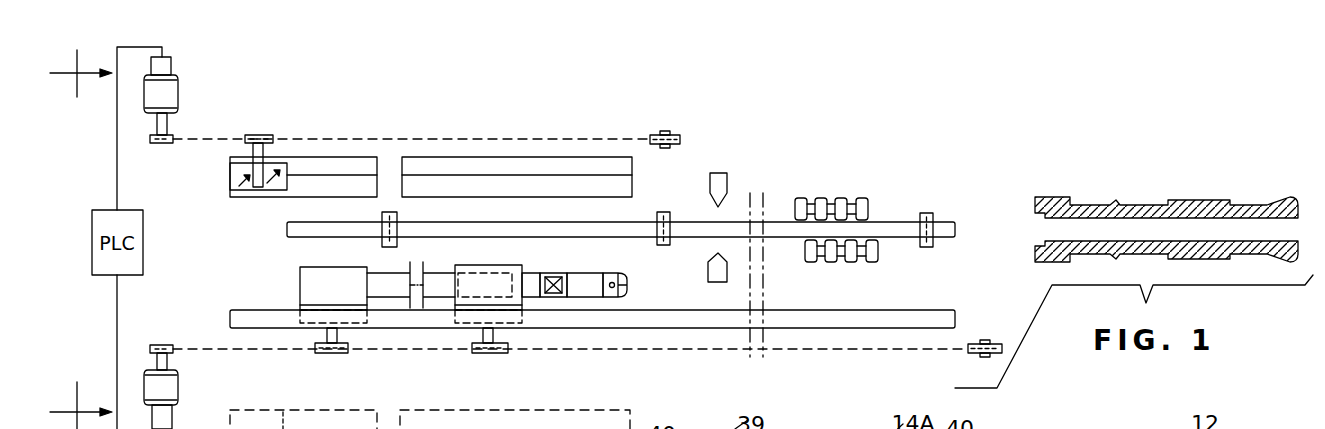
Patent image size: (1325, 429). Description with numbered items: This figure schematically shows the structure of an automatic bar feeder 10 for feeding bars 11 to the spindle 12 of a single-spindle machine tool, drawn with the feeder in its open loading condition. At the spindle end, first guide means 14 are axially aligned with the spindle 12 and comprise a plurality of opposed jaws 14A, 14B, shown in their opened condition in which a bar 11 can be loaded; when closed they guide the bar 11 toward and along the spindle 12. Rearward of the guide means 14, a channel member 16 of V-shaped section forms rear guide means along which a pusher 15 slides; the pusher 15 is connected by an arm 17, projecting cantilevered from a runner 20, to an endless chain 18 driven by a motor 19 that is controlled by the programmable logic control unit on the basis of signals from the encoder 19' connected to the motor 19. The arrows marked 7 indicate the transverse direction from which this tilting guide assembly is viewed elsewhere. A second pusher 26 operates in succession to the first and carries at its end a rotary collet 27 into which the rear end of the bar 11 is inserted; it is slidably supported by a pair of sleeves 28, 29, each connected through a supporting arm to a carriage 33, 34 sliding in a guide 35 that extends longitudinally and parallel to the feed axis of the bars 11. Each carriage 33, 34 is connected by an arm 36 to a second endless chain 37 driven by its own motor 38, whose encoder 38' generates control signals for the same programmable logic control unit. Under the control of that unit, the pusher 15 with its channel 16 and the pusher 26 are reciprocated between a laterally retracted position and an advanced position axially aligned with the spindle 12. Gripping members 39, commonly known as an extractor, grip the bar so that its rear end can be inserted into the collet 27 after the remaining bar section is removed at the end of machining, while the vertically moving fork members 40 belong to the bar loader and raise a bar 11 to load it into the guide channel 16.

The section line 7- 7 is at (81, 238).
The bar feeder 10 is at (688, 119).
The bars 11 is at (593, 228).
The spindle 12 is at (1193, 208).
The first guide means 14 is at (839, 209).
The opposed jaw 14A is at (866, 202).
The opposed jaw 14B is at (806, 253).
The pusher 15 is at (233, 180).
The channel member 16 is at (433, 165).
The arm 17 is at (250, 172).
The endless chain 18 is at (492, 138).
The drive motor 19 is at (184, 109).
The encoder 19' is at (190, 61).
The runner 20 is at (262, 136).
The second pusher 26 is at (435, 280).
The rotary collet 27 is at (612, 275).
The sleeve 28 is at (310, 268).
The sleeve 29 is at (520, 270).
The carriage 33 is at (300, 326).
The carriage 34 is at (520, 326).
The guide 35 is at (897, 318).
The arm 36 is at (350, 343).
The endless chain 37 is at (418, 352).
The motor 38 is at (184, 375).
The encoder 38' is at (188, 413).
The gripping members 39 is at (728, 180).
The fork members 40 is at (397, 217).